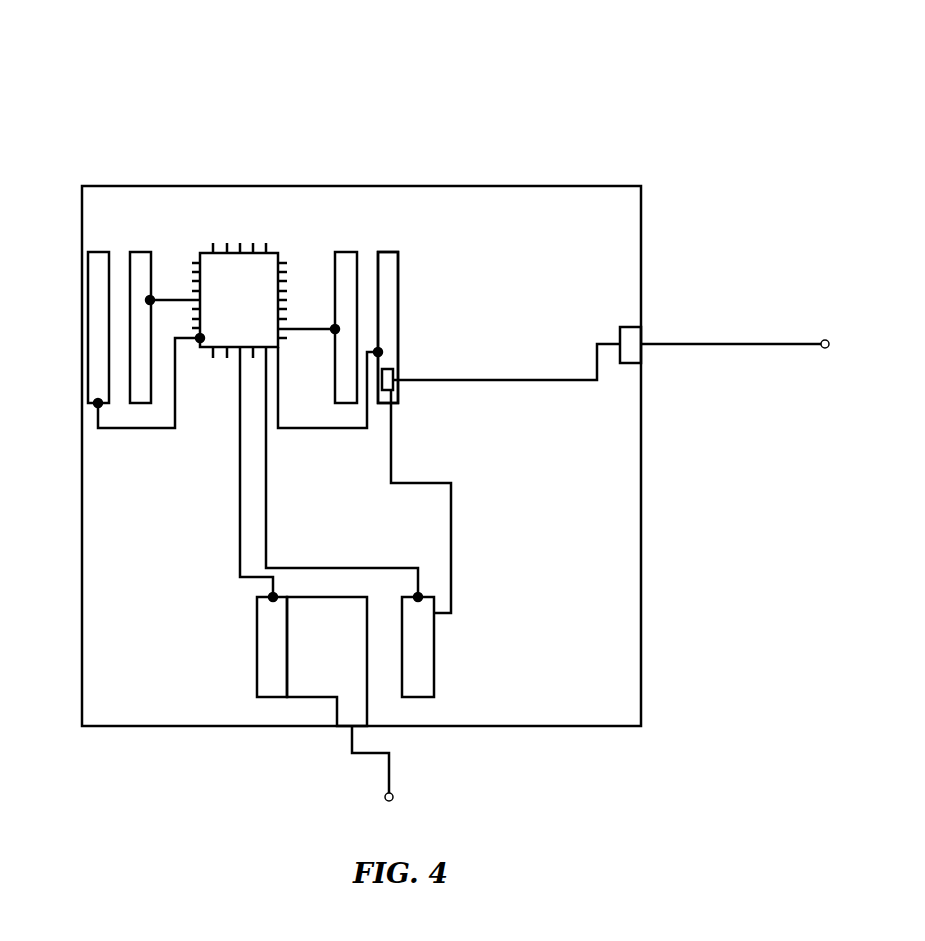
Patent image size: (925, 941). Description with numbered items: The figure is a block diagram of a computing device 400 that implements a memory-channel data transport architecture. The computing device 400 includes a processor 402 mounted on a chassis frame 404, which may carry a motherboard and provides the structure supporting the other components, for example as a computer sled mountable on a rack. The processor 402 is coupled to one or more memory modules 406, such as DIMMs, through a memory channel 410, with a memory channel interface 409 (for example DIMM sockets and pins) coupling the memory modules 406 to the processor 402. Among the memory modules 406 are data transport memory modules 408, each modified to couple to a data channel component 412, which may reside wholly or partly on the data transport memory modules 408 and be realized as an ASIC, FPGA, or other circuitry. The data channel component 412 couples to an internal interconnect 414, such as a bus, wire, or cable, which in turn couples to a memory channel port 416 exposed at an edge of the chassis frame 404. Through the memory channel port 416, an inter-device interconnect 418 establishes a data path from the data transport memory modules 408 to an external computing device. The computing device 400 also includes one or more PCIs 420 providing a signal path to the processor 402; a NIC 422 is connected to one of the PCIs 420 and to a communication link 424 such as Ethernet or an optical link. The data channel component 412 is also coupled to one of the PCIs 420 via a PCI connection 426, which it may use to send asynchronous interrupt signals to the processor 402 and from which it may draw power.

The computing device 400 is at (118, 74).
The processor 402 is at (222, 337).
The chassis frame 404 is at (562, 698).
The memory modules 406 is at (387, 252).
The data transport memory modules 408 is at (390, 325).
The memory channel interface 409 is at (93, 407).
The memory channel 410 is at (125, 430).
The data channel component 412 is at (398, 388).
The internal interconnect 414 is at (549, 380).
The memory channel port 416 is at (627, 336).
The inter-device interconnect 418 is at (650, 345).
The PCIs 420 is at (270, 683).
The NIC 422 is at (322, 684).
The communication link 424 is at (353, 740).
The PCI connection 426 is at (452, 523).